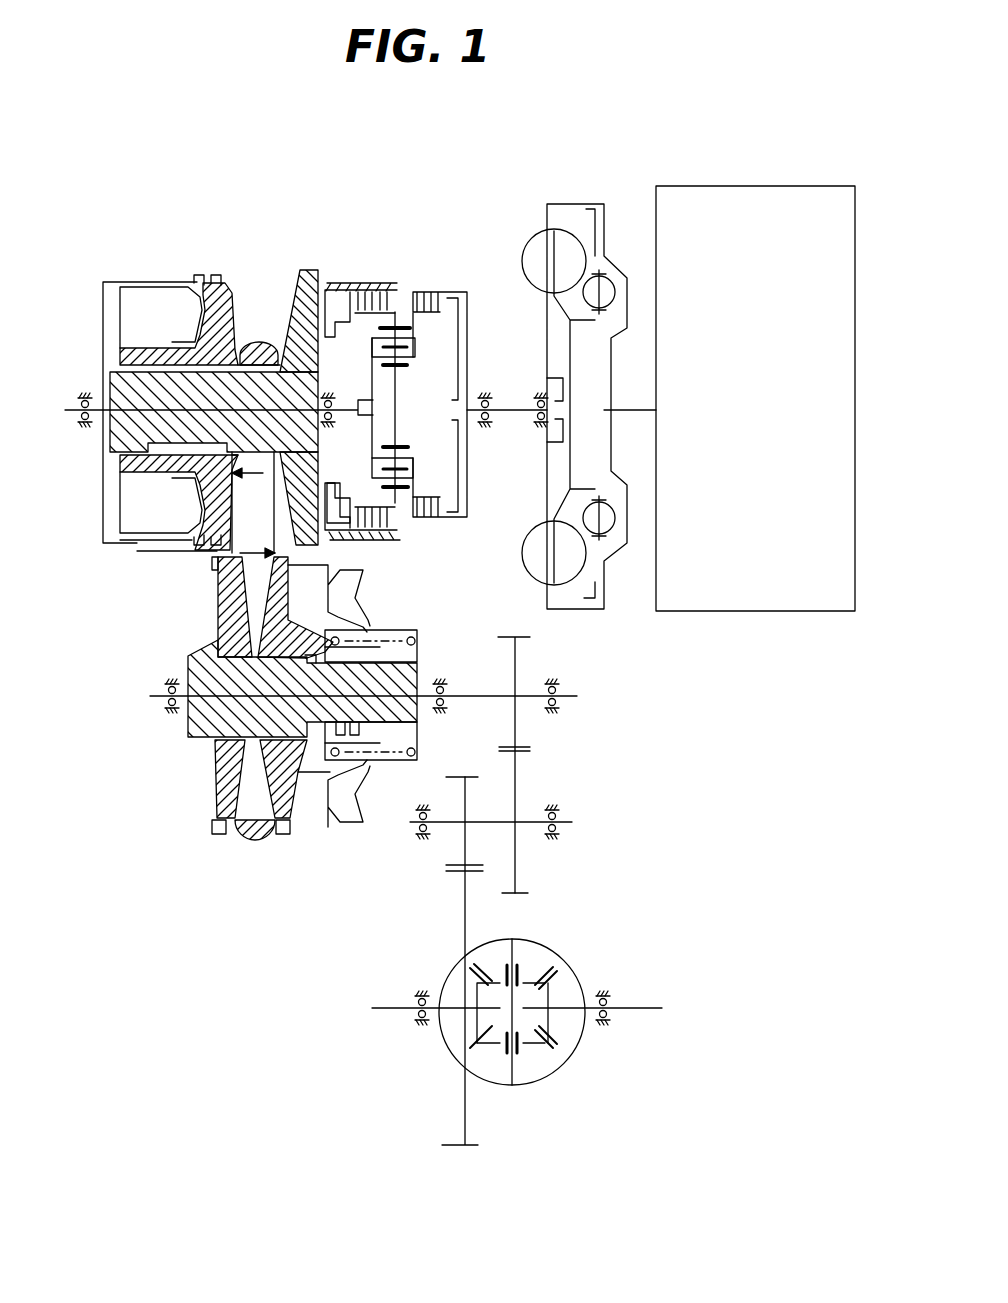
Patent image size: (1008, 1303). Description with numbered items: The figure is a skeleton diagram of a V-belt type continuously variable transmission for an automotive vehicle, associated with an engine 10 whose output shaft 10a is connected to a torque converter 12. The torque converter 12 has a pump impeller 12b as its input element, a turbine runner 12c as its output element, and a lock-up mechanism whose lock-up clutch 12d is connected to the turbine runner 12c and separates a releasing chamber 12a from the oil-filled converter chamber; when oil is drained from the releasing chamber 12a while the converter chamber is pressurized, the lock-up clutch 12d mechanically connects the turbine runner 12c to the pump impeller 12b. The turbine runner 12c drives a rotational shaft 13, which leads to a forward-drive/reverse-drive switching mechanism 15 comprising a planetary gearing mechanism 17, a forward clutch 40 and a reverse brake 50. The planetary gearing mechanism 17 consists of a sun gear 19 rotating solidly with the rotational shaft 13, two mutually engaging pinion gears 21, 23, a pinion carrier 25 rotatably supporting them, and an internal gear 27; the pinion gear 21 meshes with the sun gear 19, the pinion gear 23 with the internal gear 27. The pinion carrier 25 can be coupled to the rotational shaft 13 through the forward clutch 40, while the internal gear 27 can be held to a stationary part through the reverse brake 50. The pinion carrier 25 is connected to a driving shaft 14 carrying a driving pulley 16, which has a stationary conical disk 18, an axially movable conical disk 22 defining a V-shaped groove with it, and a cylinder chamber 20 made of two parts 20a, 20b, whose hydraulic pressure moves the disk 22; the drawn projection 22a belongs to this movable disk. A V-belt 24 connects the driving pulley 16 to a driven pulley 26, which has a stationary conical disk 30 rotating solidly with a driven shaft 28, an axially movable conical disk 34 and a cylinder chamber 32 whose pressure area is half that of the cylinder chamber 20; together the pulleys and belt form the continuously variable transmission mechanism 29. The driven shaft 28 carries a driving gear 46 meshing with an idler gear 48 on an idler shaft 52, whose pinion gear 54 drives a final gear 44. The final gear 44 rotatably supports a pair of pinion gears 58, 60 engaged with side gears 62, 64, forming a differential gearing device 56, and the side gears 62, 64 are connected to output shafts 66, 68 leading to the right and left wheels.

The engine 10 is at (750, 186).
The output shaft 10a is at (631, 402).
The torque converter 12 is at (567, 200).
The releasing chamber 12a is at (588, 448).
The pump impeller 12b is at (546, 565).
The turbine runner 12c is at (555, 545).
The lock-up clutch 12d is at (611, 212).
The rotational shaft 13 is at (514, 414).
The driving shaft 14 is at (350, 403).
The forward-drive/reverse-drive switching mechanism 15 is at (366, 275).
The driving pulley 16 is at (291, 262).
The planetary gearing mechanism 17 is at (425, 350).
The stationary conical disk 18 is at (305, 270).
The sun gear 19 is at (397, 425).
The cylinder chamber 20 is at (135, 300).
The cylinder chamber part 20a is at (106, 545).
The cylinder chamber part 20b is at (197, 282).
The pinion gear 21 is at (410, 450).
The axially movable conical disk 22 is at (226, 284).
The armature projection 22a is at (232, 290).
The pinion gear 23 is at (412, 480).
The V-belt 24 is at (230, 530).
The pinion carrier 25 is at (372, 438).
The driven pulley 26 is at (245, 853).
The internal gear 27 is at (395, 505).
The driven shaft 28 is at (478, 698).
The V-belt type continuously variable transmission mechanism 29 is at (212, 608).
The stationary conical disk 30 is at (230, 762).
The cylinder chamber 32 is at (317, 800).
The axially movable conical disk 34 is at (290, 813).
The forward clutch 40 is at (443, 290).
The final gear 44 is at (470, 1145).
The driving gear 46 is at (506, 637).
The idler gear 48 is at (515, 893).
The reverse brake 50 is at (398, 290).
The idler shaft 52 is at (528, 822).
The pinion gear 54 is at (462, 848).
The differential gearing device 56 is at (575, 947).
The pinion gear 58 is at (528, 1045).
The pinion gear 60 is at (493, 973).
The side gear 62 is at (475, 1022).
The side gear 64 is at (550, 985).
The output shaft 66 is at (382, 1010).
The output shaft 68 is at (648, 1008).